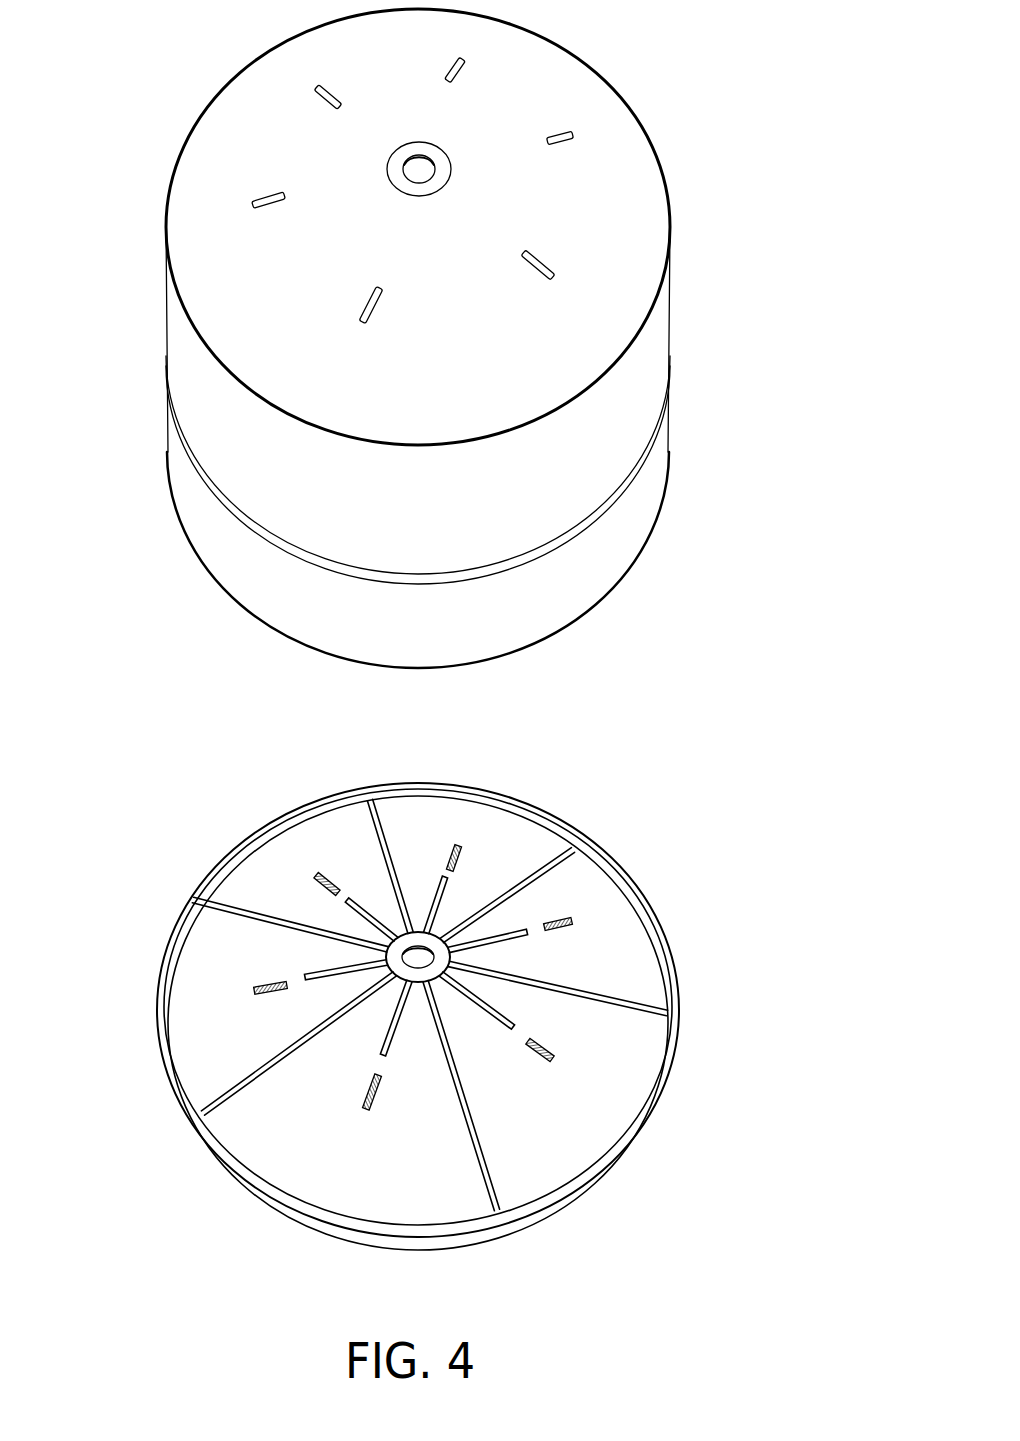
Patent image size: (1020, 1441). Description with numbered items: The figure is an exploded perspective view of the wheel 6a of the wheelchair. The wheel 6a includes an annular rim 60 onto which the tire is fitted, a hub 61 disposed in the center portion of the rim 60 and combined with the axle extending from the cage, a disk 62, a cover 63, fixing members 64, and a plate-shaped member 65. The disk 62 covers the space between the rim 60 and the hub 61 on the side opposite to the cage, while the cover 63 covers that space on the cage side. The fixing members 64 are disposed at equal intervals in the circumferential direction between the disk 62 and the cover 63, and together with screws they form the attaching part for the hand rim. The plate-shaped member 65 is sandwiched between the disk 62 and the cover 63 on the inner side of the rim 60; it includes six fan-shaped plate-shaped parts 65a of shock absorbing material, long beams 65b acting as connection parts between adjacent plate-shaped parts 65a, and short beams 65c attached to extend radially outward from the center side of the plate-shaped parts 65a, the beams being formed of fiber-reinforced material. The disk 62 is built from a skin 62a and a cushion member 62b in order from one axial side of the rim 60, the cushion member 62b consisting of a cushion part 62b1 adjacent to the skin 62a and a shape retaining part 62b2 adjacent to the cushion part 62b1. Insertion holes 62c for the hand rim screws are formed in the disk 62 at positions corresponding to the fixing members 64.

The wheel 6a is at (121, 154).
The disk 62 is at (705, 39).
The skin 62a is at (628, 128).
The cushion member 62b is at (750, 315).
The cushion part 62b1 is at (668, 338).
The shape retaining part 62b2 is at (668, 460).
The insertion holes 62c is at (268, 193).
The rim 60 is at (678, 1058).
The hub 61 is at (433, 983).
The cover 63 is at (583, 1160).
The fixing members 64 is at (460, 850).
The plate-shaped member 65 is at (608, 1132).
The plate-shaped parts 65a is at (510, 822).
The long beams 65b is at (383, 828).
The short beams 65c is at (360, 897).